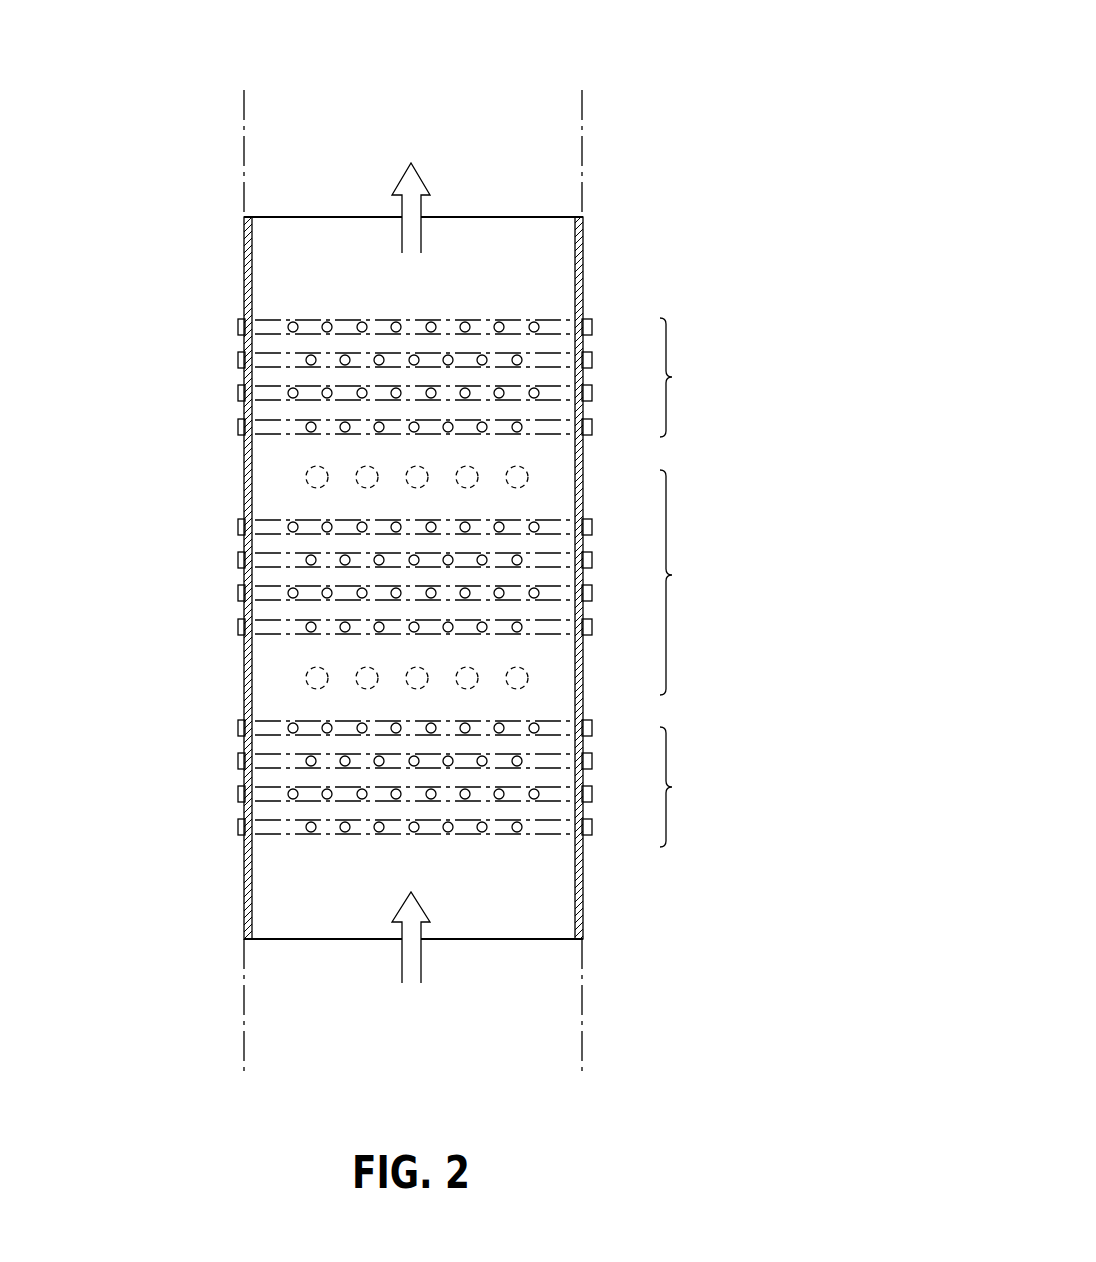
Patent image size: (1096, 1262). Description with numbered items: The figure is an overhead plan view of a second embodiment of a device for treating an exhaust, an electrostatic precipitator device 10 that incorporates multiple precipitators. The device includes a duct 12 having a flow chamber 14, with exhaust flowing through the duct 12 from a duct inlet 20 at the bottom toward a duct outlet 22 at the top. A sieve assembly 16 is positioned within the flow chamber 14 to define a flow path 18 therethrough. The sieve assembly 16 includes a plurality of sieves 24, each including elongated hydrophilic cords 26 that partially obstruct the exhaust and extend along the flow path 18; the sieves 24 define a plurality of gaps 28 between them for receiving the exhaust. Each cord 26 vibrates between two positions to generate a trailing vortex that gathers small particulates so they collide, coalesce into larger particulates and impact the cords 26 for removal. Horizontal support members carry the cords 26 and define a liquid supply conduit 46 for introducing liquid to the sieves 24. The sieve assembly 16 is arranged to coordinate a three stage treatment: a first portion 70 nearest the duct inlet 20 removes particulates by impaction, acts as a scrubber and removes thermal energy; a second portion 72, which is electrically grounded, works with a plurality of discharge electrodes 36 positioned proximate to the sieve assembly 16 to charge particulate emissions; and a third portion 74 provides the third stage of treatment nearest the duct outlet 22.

The precipitator device 10 is at (717, 70).
The duct 12 is at (590, 223).
The flow chamber 14 is at (329, 870).
The sieve assembly 16 is at (274, 305).
The flow path 18 is at (402, 965).
The duct inlet 20 is at (508, 938).
The duct outlet 22 is at (320, 217).
The sieve 24 is at (284, 332).
The elongated cord 26 is at (465, 322).
The gap 28 is at (346, 320).
The discharge electrode 36 is at (308, 478).
The liquid supply conduit 46 is at (283, 438).
The first portion of the sieve assembly 70 is at (689, 787).
The second portion of the sieve assembly 72 is at (689, 582).
The third portion of the sieve assembly 74 is at (689, 377).